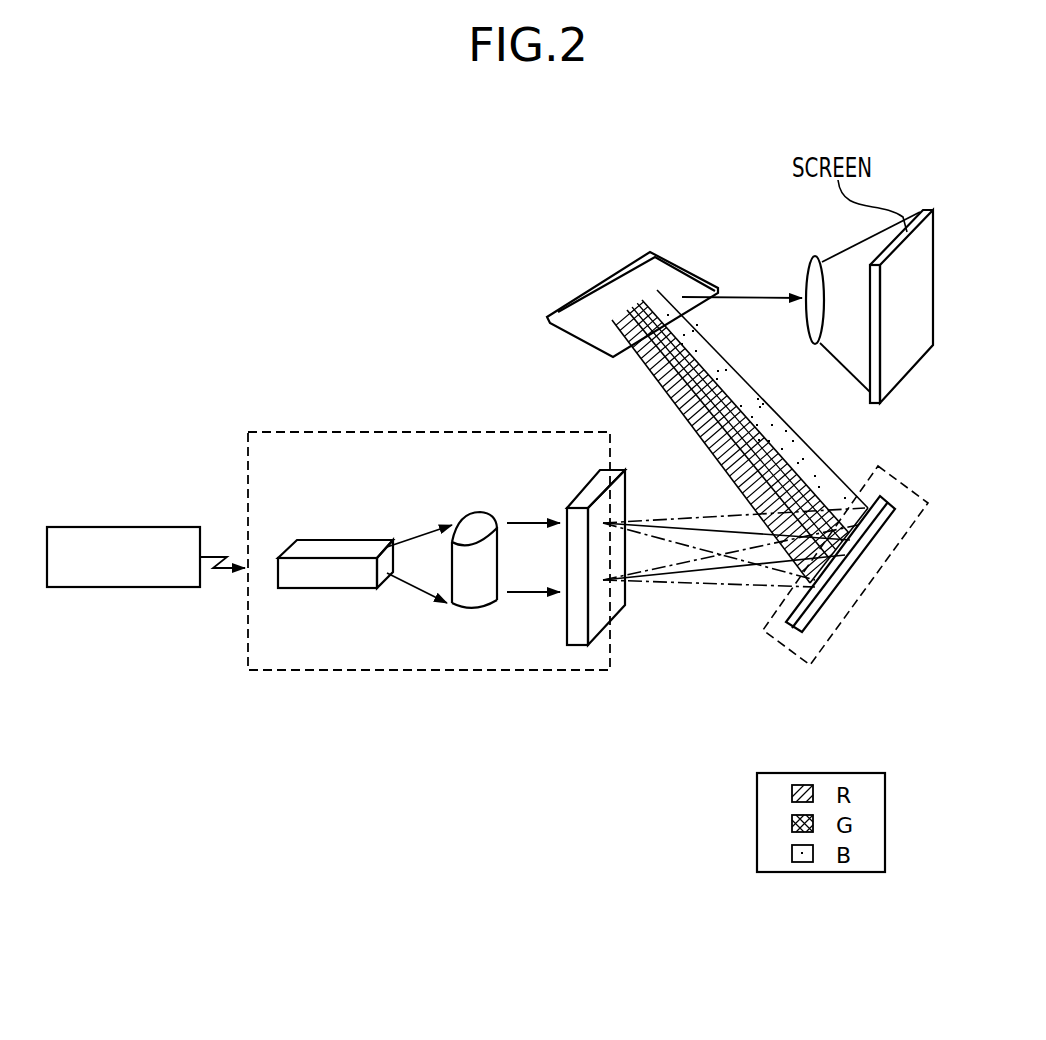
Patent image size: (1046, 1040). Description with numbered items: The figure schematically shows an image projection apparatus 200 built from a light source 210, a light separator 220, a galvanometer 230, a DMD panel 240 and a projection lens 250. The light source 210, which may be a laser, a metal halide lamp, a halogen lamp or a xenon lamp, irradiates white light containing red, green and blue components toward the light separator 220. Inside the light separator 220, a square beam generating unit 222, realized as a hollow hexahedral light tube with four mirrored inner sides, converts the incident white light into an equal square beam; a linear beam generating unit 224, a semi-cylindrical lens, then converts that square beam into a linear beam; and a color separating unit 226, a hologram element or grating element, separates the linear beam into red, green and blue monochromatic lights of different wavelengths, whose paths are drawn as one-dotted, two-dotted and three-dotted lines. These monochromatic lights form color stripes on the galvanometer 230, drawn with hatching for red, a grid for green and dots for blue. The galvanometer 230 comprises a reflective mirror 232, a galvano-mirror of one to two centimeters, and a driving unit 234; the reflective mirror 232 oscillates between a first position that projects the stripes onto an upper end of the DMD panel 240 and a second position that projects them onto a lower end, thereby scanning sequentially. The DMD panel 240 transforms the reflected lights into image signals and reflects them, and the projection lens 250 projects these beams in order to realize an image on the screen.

The image projection apparatus 200 is at (395, 224).
The light source 210 is at (130, 587).
The light separator 220 is at (297, 670).
The square beam generating unit 222 is at (333, 582).
The linear beam generating unit 224 is at (478, 523).
The color separating unit 226 is at (582, 630).
The galvanometer 230 is at (764, 632).
The reflective mirror 232 is at (786, 633).
The driving unit 234 is at (824, 636).
The DMD panel 240 is at (558, 312).
The projection lens 250 is at (820, 272).